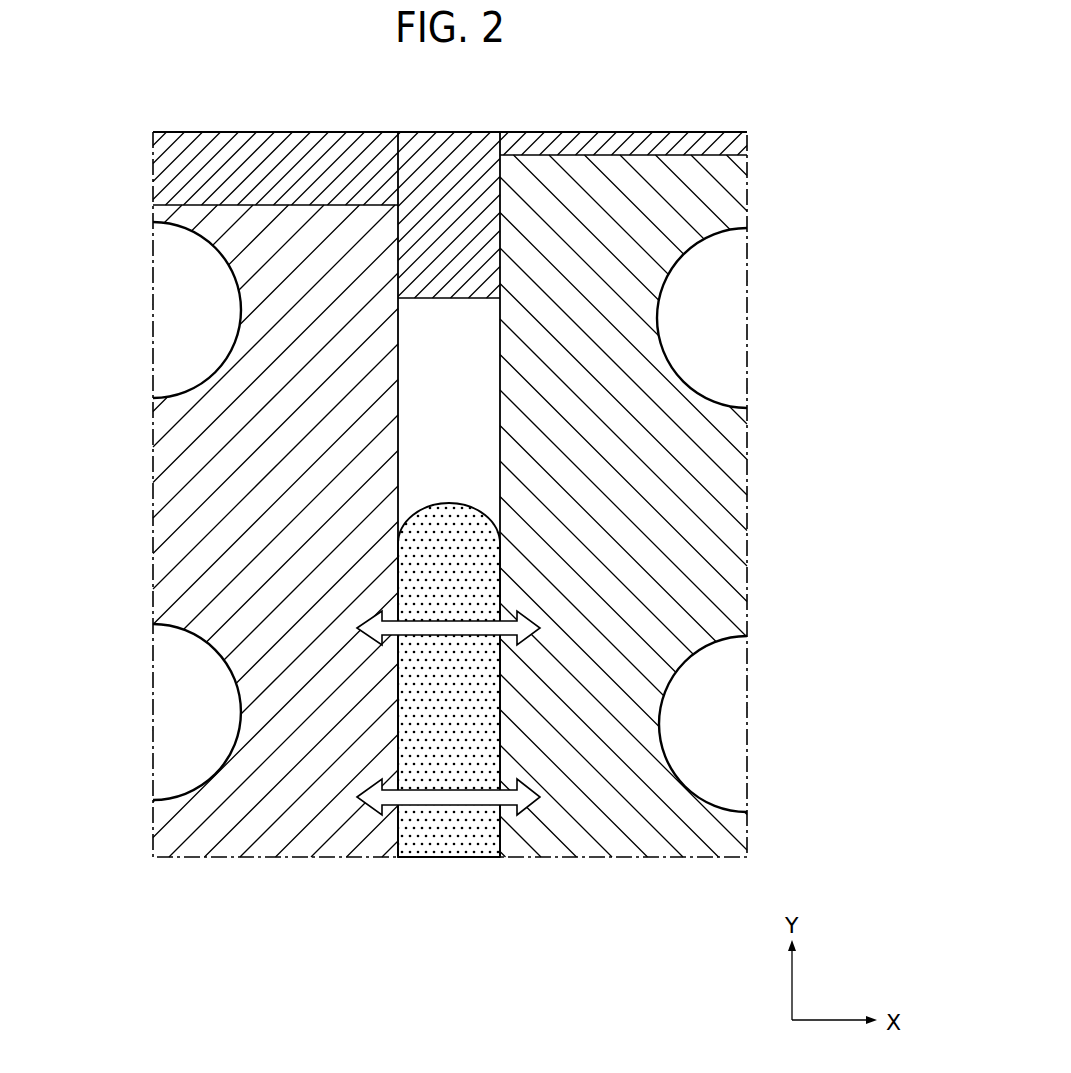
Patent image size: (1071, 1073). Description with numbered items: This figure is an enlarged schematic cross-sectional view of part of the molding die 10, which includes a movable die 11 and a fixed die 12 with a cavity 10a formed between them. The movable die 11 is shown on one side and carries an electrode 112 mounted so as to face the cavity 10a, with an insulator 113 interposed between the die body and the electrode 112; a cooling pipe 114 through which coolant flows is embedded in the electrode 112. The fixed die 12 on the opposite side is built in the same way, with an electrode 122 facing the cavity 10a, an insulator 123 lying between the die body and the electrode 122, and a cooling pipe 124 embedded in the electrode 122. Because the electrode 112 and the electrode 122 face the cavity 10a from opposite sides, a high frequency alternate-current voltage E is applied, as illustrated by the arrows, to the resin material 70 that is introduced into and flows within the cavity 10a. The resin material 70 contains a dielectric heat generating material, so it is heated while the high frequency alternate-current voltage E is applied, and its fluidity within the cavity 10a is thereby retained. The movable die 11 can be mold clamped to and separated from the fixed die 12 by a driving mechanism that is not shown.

The molding die 10 is at (457, 501).
The cavity 10a is at (445, 384).
The movable die 11 is at (672, 494).
The fixed die 12 is at (223, 494).
The resin material 70 is at (428, 682).
The electrode 112 is at (705, 507).
The insulator 113 is at (676, 157).
The cooling pipe 114 is at (707, 320).
The electrode 122 is at (203, 517).
The insulator 123 is at (197, 158).
The cooling pipe 124 is at (185, 318).
The high frequency alternate-current voltage E is at (440, 797).